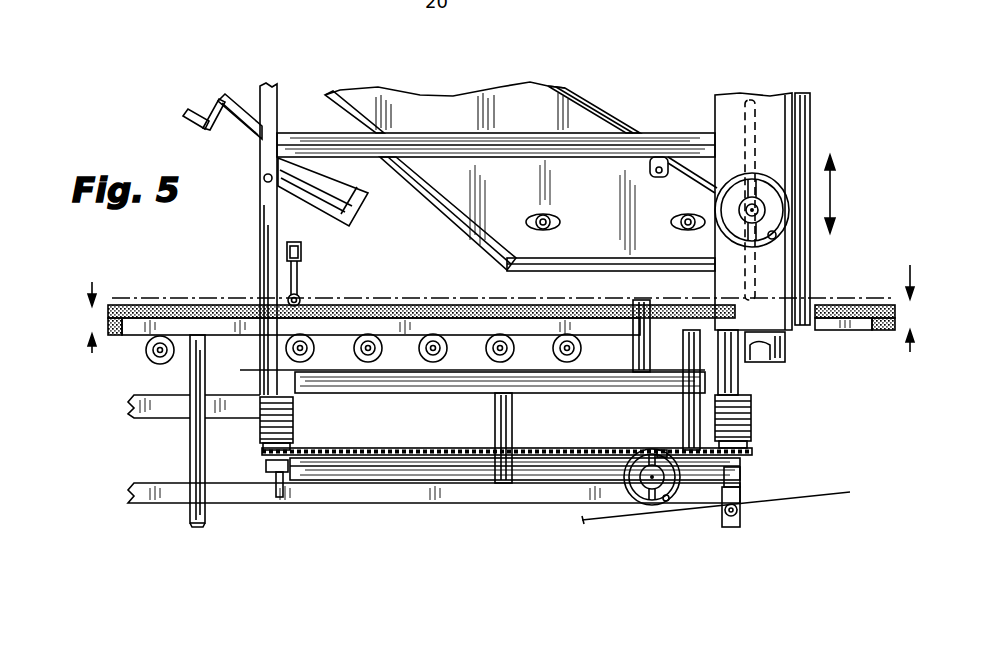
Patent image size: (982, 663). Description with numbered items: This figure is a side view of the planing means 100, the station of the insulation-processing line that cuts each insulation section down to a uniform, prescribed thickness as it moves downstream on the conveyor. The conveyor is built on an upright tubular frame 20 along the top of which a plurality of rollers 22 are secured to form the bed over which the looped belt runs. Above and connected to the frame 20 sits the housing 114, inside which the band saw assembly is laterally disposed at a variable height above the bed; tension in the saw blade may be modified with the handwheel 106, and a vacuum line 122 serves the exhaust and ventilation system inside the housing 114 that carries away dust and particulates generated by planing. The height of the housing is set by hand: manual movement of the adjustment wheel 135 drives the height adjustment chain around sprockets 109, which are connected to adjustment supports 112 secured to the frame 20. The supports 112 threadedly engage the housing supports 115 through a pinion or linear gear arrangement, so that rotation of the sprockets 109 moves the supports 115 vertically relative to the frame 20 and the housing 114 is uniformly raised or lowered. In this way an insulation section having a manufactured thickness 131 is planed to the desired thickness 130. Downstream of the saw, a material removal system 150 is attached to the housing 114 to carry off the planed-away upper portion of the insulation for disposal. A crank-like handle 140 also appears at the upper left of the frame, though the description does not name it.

The tubular frame 20 is at (468, 500).
The rollers 22 is at (578, 362).
The planing means 100 is at (655, 108).
The handwheel 106 is at (770, 182).
The sprockets 109 is at (745, 452).
The adjustment supports 112 is at (745, 414).
The housing 114 is at (805, 92).
The housing supports 115 is at (745, 388).
The vacuum line 122 is at (748, 103).
The desired thickness 130 is at (90, 322).
The manufactured thickness 131 is at (918, 320).
The adjustment wheel 135 is at (656, 505).
The crank handle 140 is at (238, 122).
The material removal system 150 is at (552, 92).